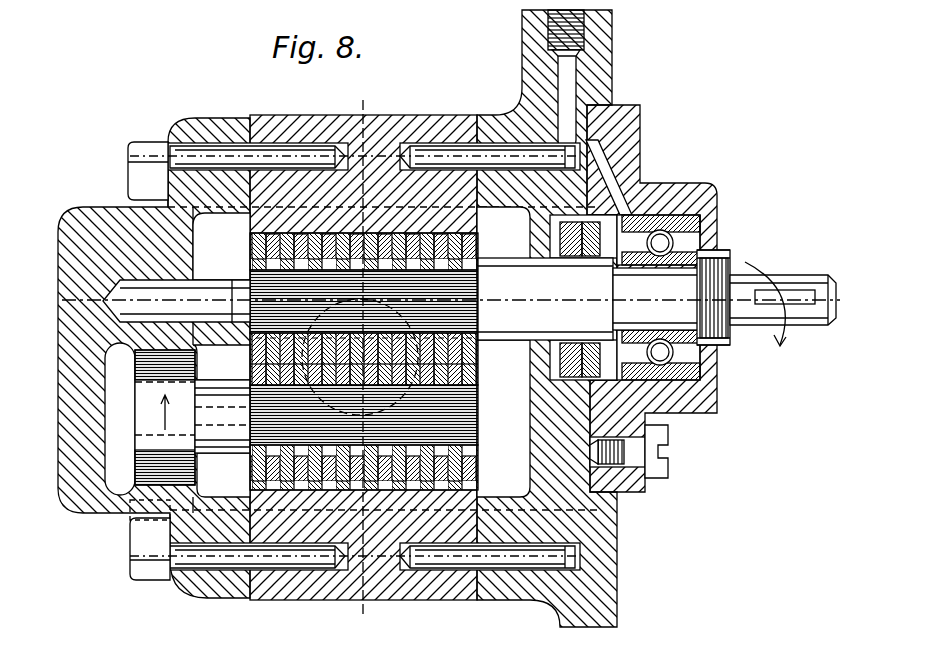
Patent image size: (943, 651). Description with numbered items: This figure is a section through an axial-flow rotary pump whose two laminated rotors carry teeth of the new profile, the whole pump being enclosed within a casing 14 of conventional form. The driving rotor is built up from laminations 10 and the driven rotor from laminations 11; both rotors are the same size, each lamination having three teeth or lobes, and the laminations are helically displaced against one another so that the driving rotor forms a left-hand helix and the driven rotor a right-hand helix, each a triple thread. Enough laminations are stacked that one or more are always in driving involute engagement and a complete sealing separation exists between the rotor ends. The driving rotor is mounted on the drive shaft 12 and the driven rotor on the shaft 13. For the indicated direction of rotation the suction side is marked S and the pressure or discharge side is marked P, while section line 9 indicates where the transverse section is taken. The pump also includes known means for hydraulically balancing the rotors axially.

The section line 9— 9 is at (363, 100).
The laminations of the driving rotor 10 is at (258, 251).
The laminations of the driven rotor 11 is at (258, 472).
The drive shaft 12 is at (453, 283).
The shaft 13 is at (455, 422).
The casing 14 is at (412, 130).
The suction side S is at (192, 417).
The pressure side P is at (505, 384).